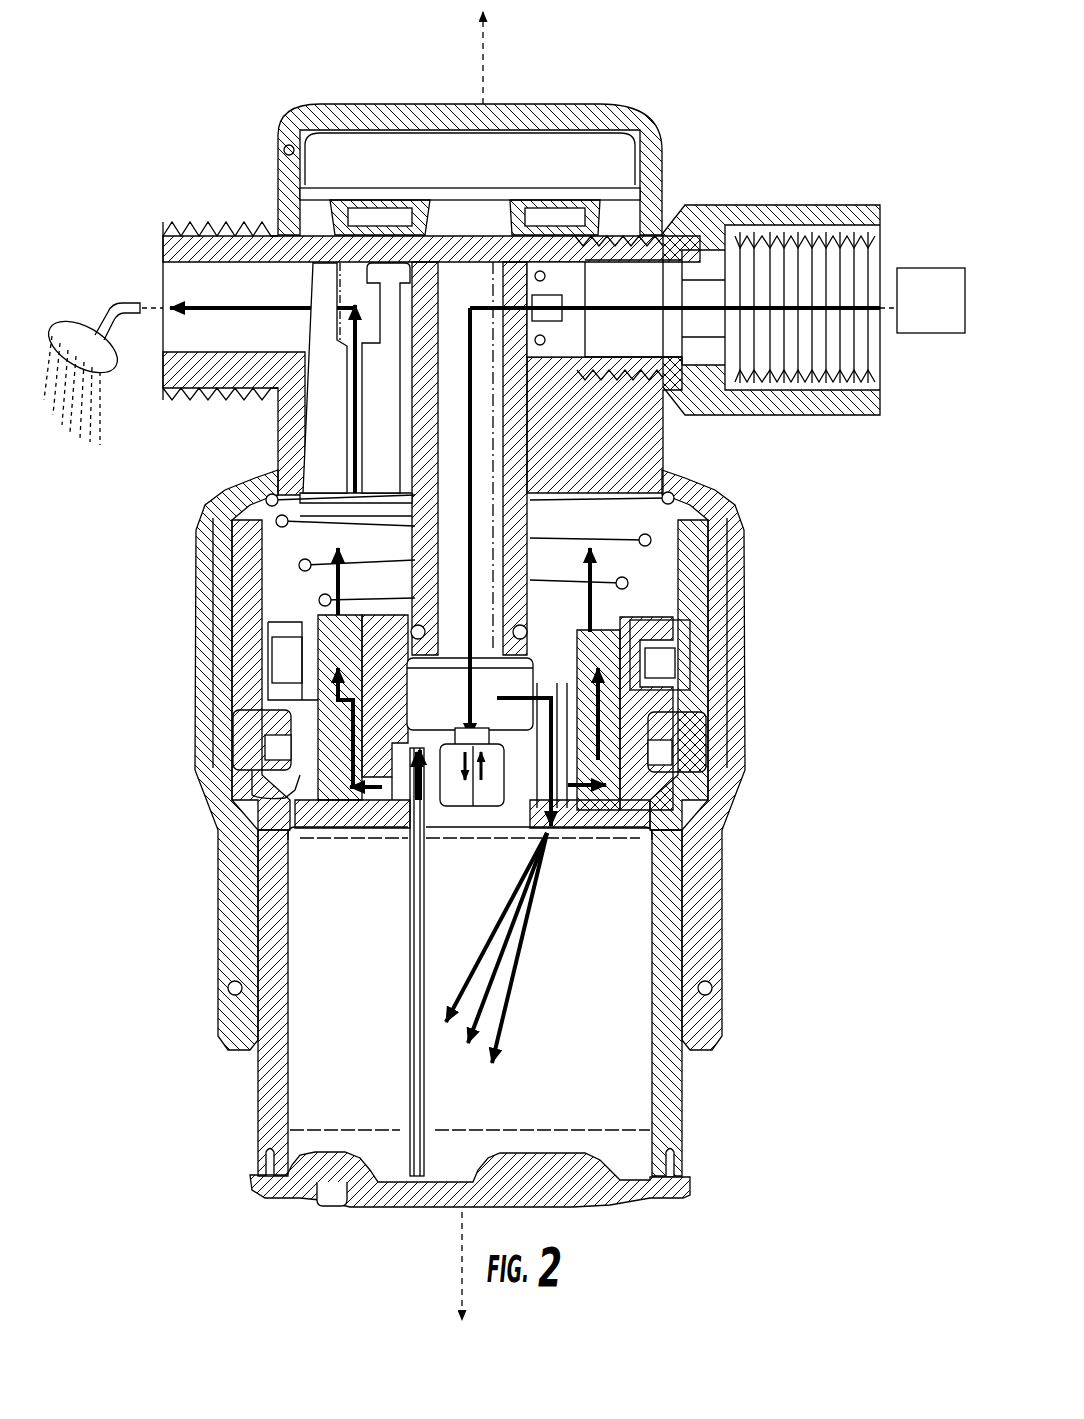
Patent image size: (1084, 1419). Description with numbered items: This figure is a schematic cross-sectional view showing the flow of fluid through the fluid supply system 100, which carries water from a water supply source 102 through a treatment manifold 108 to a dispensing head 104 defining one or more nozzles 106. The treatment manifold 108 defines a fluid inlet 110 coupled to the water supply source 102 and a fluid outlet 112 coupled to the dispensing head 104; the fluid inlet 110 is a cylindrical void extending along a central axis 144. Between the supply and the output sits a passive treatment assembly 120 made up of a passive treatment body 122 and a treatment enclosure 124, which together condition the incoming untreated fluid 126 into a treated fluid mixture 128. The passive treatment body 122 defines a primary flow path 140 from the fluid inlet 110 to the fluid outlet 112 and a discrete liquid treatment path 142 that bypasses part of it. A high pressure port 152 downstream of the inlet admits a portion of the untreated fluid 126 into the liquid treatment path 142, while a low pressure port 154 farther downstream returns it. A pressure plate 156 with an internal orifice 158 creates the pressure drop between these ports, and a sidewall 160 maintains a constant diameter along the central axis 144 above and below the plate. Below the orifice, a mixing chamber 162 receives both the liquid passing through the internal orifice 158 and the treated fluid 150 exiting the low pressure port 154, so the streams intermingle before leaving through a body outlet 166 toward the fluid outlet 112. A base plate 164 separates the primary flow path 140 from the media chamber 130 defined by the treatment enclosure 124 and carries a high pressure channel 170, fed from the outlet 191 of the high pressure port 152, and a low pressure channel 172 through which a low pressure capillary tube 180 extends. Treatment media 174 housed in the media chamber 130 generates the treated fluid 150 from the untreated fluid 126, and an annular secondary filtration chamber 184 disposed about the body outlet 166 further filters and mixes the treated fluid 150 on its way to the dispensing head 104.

The fluid supply system 100 is at (502, 660).
The water supply source 102 is at (947, 315).
The dispensing head 104 is at (78, 312).
The nozzle 106 is at (98, 435).
The treatment manifold 108 is at (620, 108).
The fluid inlet 110 is at (640, 262).
The fluid outlet 112 is at (298, 292).
The passive treatment assembly 120 is at (215, 1085).
The passive treatment body 122 is at (275, 845).
The treatment enclosure 124 is at (258, 1118).
The untreated fluid 126 is at (780, 300).
The treated fluid mixture 128 is at (232, 302).
The media chamber 130 is at (582, 1012).
The primary flow path 140 is at (388, 660).
The liquid treatment path 142 is at (525, 932).
The central axis 144 is at (487, 42).
The treated fluid 150 is at (411, 1068).
The high pressure port 152 is at (557, 700).
The low pressure port 154 is at (428, 748).
The pressure plate 156 is at (455, 800).
The internal orifice 158 is at (480, 785).
The sidewall 160 is at (600, 630).
The mixing chamber 162 is at (563, 834).
The base plate 164 is at (352, 820).
The body outlet 166 is at (316, 606).
The high pressure channel 170 is at (555, 792).
The low pressure channel 172 is at (378, 830).
The treatment media 174 is at (652, 1080).
The low pressure capillary tube 180 is at (410, 1018).
The secondary filtration chamber 184 is at (605, 720).
The outlet of high pressure port 191 is at (565, 830).